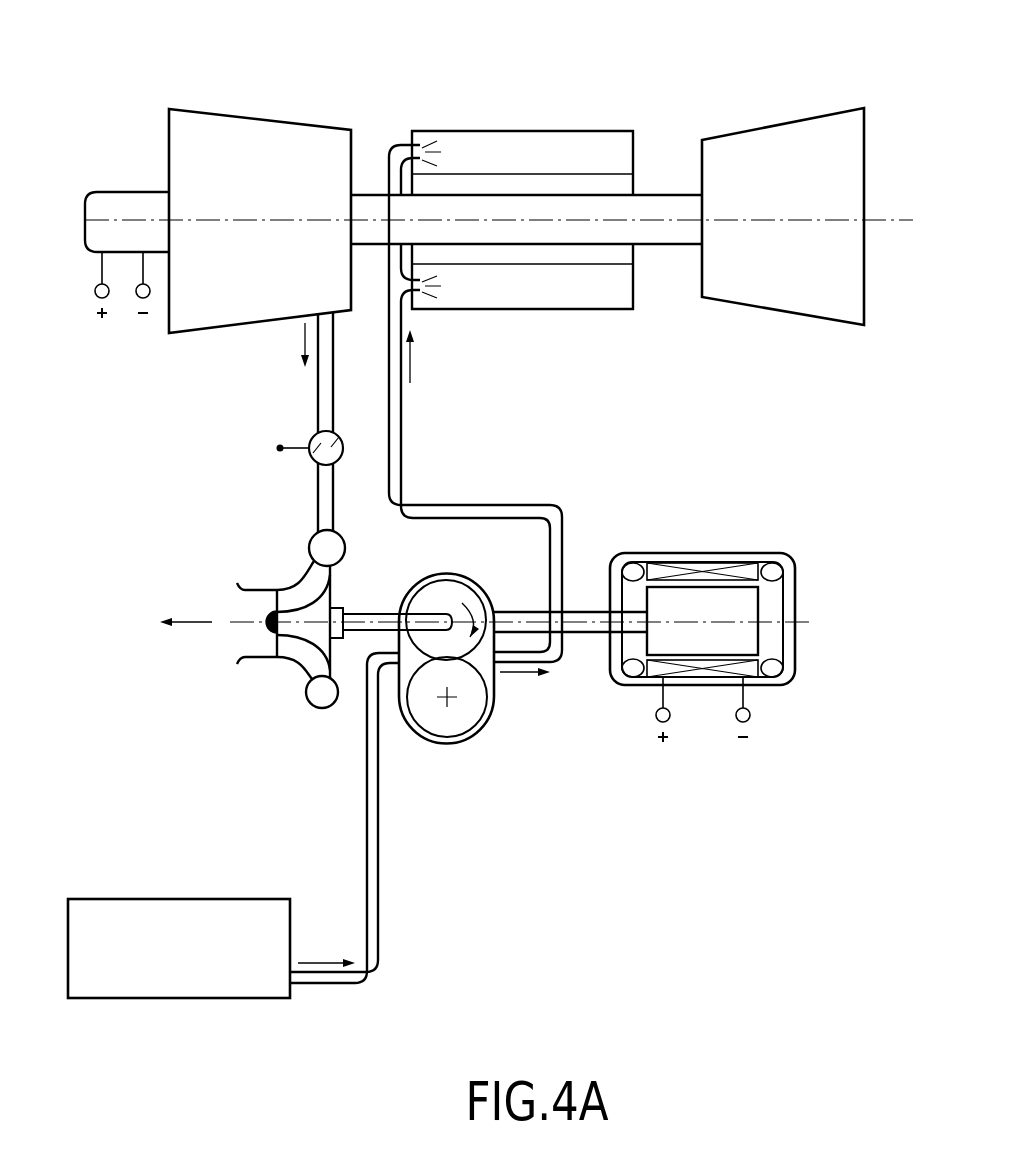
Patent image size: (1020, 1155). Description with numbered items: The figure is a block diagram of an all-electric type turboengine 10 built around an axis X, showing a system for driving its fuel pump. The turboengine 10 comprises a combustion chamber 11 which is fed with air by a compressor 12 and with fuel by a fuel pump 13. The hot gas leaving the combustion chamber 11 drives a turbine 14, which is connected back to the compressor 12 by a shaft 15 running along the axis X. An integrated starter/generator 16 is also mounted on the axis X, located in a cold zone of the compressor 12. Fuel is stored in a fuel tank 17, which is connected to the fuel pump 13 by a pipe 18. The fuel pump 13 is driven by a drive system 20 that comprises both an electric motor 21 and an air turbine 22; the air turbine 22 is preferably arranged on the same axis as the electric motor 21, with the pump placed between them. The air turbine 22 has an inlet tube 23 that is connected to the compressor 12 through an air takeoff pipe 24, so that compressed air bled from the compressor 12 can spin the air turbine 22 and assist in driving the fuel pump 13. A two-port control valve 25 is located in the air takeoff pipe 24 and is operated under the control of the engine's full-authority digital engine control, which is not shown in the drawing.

The turboengine 10 is at (678, 70).
The combustion chamber 11 is at (520, 132).
The compressor 12 is at (248, 117).
The fuel pump 13 is at (488, 595).
The turbine 14 is at (797, 122).
The shaft 15 is at (667, 245).
The integrated starter/generator 16 is at (121, 192).
The fuel tank 17 is at (162, 958).
The pipe 18 is at (372, 855).
The drive system 20 is at (307, 720).
The electric motor 21 is at (705, 640).
The air turbine 22 is at (272, 662).
The inlet tube 23 is at (307, 552).
The air takeoff pipe 24 is at (318, 494).
The two-port control valve 25 is at (310, 438).
The axis X is at (893, 218).